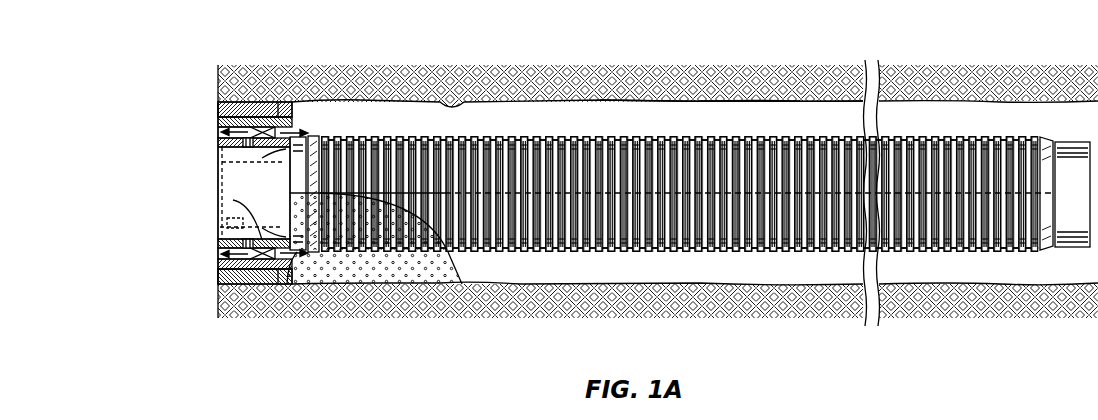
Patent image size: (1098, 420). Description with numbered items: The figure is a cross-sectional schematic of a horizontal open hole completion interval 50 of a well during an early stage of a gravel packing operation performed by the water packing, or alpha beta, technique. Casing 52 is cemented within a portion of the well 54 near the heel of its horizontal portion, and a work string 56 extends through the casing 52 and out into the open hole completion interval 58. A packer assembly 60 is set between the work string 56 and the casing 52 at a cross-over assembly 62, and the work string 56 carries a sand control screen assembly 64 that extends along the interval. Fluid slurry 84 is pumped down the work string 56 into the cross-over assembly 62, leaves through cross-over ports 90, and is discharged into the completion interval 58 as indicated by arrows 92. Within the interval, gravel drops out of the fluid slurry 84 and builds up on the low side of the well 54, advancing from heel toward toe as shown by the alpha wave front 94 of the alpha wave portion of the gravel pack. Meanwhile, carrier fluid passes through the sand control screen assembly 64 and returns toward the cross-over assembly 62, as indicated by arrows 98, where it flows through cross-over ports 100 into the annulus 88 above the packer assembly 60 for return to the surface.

The completion interval 50 is at (667, 102).
The casing 52 is at (278, 104).
The well 54 is at (466, 102).
The work string 56 is at (581, 136).
The open hole completion interval 58 is at (712, 102).
The packer assembly 60 is at (245, 140).
The cross-over assembly 62 is at (266, 262).
The sand control screen assembly 64 is at (520, 136).
The fluid slurry 84 is at (413, 273).
The annulus 88 is at (218, 140).
The cross-over ports 90 is at (278, 262).
The arrows 92 is at (297, 127).
The alpha wave front 94 is at (455, 267).
The arrows 98 is at (288, 172).
The cross-over ports 100 is at (218, 103).